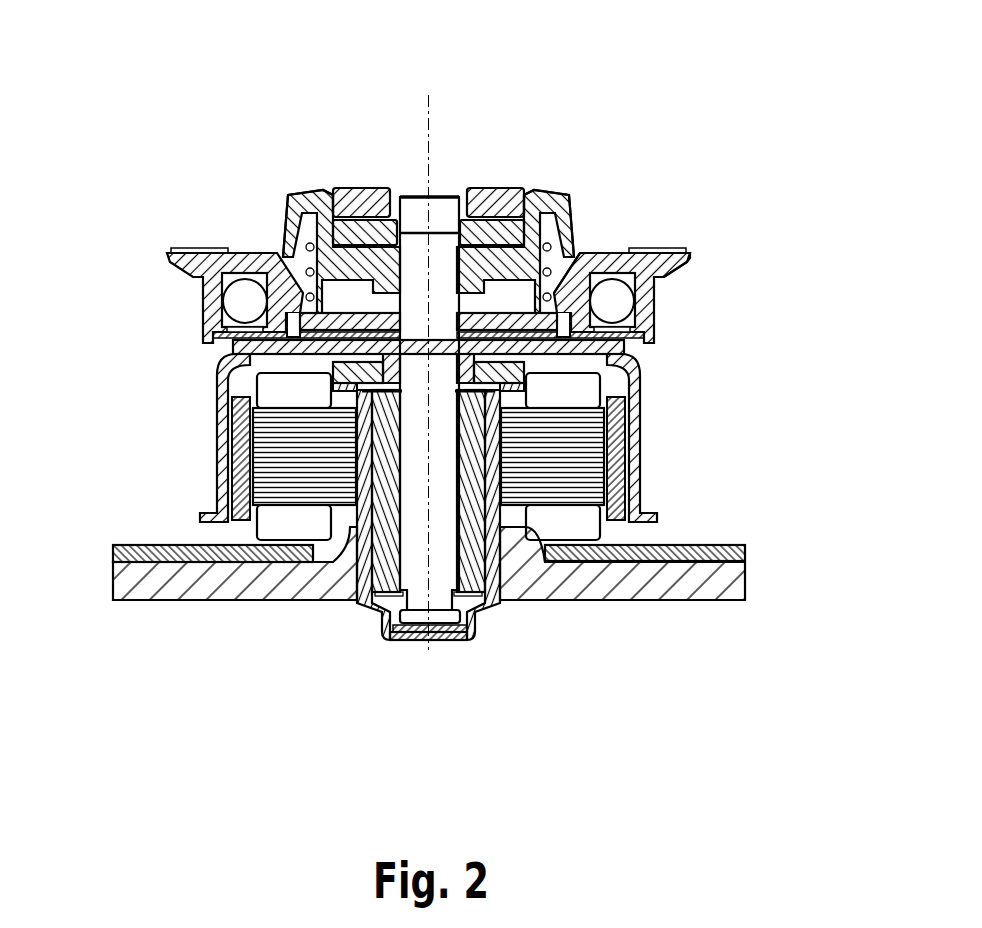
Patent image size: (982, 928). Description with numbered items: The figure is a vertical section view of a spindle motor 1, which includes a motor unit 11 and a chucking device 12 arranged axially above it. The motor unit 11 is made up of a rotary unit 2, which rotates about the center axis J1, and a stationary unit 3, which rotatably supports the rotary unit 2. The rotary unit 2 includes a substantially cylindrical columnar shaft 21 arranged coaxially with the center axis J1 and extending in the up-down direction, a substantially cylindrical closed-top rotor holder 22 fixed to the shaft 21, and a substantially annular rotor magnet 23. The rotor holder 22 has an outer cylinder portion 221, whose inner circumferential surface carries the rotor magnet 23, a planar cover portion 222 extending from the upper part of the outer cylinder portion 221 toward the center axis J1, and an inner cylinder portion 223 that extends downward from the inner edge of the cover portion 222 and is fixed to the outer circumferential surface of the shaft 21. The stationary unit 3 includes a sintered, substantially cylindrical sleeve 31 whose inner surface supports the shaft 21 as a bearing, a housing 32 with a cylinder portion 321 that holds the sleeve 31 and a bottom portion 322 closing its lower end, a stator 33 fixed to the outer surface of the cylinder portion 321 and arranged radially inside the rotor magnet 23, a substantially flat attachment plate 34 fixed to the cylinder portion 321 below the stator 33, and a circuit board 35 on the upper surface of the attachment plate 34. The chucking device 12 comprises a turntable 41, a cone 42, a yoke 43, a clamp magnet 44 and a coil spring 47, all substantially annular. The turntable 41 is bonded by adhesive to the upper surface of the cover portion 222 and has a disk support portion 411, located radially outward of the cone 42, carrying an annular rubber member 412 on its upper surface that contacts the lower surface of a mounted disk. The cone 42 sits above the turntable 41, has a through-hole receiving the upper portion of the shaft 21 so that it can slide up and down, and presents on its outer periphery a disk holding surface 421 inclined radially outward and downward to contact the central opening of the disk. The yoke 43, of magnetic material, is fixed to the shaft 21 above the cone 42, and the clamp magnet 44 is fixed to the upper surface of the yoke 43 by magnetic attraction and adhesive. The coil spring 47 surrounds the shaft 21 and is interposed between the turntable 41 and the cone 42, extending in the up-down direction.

The spindle motor 1 is at (222, 90).
The motor unit 11 is at (146, 411).
The chucking device 12 is at (143, 207).
The rotary unit 2 is at (783, 394).
The shaft 21 is at (412, 255).
The rotor holder 22 is at (722, 356).
The outer cylinder portion 221 is at (640, 400).
The cover portion 222 is at (640, 320).
The inner cylinder portion 223 is at (532, 378).
The rotor magnet 23 is at (623, 482).
The stationary unit 3 is at (243, 680).
The sleeve 31 is at (364, 565).
The housing 32 is at (548, 710).
The cylinder portion 321 is at (497, 575).
The bottom portion 322 is at (453, 641).
The stator 33 is at (284, 523).
The attachment plate 34 is at (182, 600).
The circuit board 35 is at (137, 545).
The turntable 41 is at (726, 244).
The disk support portion 411 is at (697, 226).
The annular rubber member 412 is at (657, 248).
The cone 42 is at (540, 212).
The disk holding surface 421 is at (575, 220).
The yoke 43 is at (502, 205).
The clamp magnet 44 is at (486, 190).
The coil spring 47 is at (551, 270).
The center axis J1 is at (425, 118).